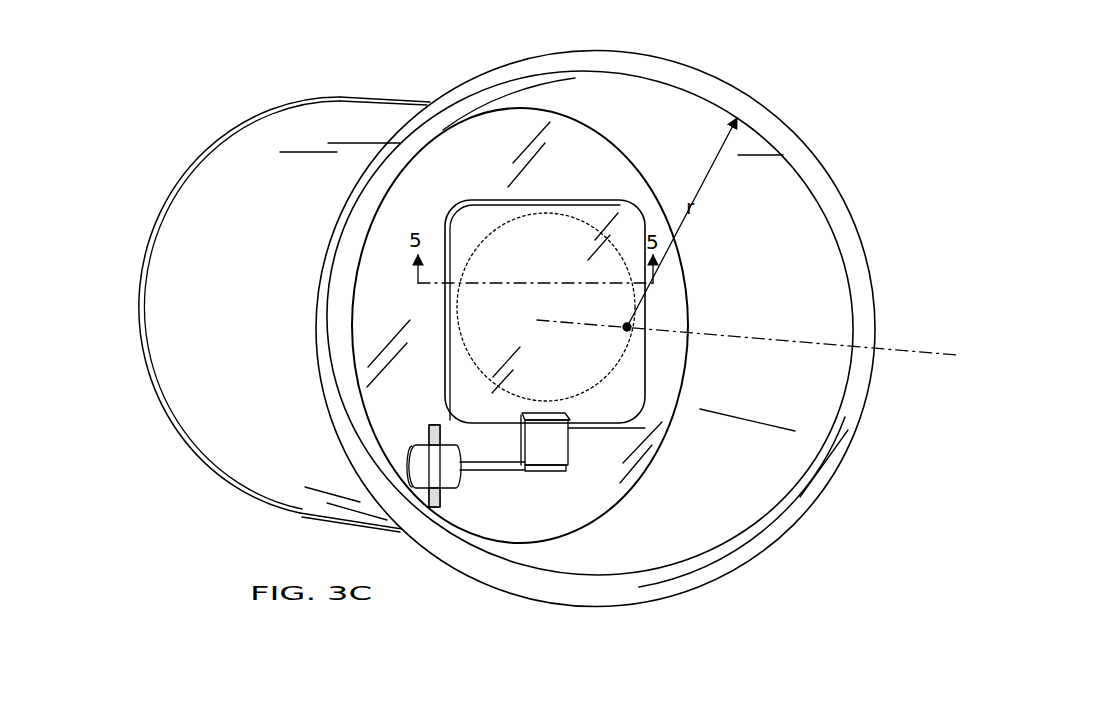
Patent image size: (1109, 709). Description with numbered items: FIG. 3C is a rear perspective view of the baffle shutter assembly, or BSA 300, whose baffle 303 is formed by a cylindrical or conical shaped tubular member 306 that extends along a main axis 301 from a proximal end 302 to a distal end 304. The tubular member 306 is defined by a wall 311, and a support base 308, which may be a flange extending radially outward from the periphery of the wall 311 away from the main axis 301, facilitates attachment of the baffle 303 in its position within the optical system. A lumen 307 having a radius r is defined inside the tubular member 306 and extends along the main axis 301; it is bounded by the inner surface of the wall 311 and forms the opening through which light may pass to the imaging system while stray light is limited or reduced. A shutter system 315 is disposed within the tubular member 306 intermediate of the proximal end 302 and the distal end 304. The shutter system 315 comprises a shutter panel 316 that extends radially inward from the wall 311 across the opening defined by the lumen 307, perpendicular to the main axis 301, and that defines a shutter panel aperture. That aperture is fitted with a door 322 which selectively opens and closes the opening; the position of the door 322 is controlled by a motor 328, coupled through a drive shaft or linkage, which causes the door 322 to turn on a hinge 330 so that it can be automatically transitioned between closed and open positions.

The BSA 300 is at (190, 82).
The main axis 301 is at (903, 357).
The proximal end 302 is at (878, 255).
The baffle 303 is at (205, 186).
The distal end 304 is at (165, 481).
The tubular member 306 is at (368, 105).
The lumen 307 is at (712, 516).
The support base 308 is at (683, 65).
The wall 311 is at (140, 310).
The shutter system 315 is at (553, 473).
The shutter panel 316 is at (683, 318).
The door 322 is at (447, 403).
The motor 328 is at (452, 490).
The hinge 330 is at (553, 446).